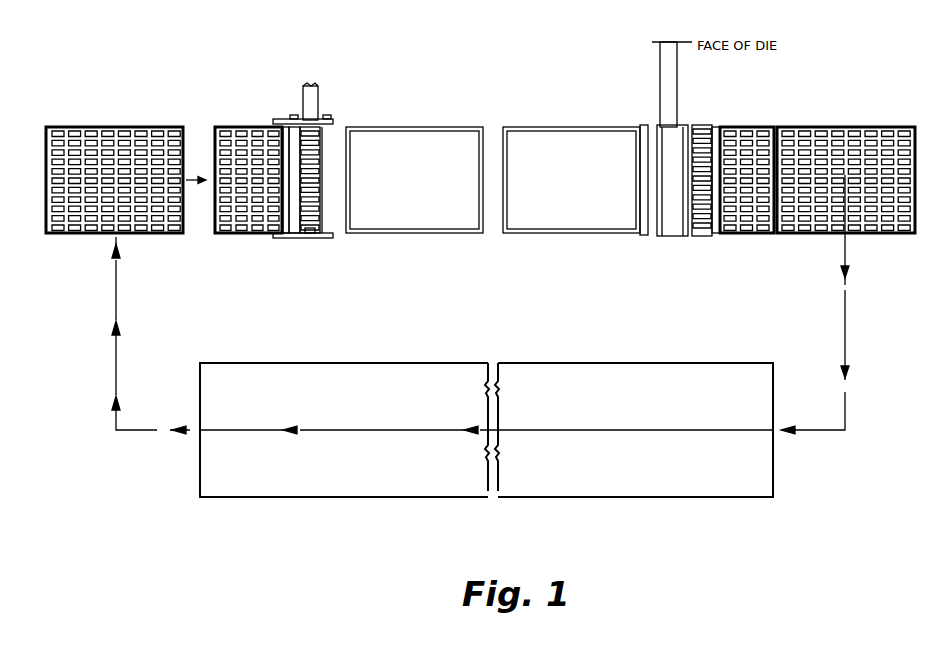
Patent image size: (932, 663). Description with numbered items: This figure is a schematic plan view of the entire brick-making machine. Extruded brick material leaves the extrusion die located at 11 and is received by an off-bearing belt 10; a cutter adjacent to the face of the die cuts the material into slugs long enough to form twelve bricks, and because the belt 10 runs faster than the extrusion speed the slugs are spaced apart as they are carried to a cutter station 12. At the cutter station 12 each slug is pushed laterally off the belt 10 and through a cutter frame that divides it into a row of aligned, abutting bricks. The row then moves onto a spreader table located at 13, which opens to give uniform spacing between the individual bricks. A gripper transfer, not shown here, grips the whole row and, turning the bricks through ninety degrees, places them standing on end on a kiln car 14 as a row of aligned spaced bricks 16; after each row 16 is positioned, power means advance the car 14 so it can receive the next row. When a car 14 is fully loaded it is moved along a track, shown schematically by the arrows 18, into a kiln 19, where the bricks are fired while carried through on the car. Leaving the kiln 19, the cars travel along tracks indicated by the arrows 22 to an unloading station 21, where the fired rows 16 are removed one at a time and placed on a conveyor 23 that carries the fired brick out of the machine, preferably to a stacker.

The off-bearing belt 10 is at (677, 80).
The extrusion die 11 is at (655, 43).
The cutter station 12 is at (679, 208).
The spreader table 13 is at (700, 242).
The kiln car 14 is at (229, 127).
The row of aligned spaced bricks 16 is at (255, 234).
The arrows (track to kiln) 18 is at (847, 320).
The kiln 19 is at (660, 360).
The unloading station 21 is at (302, 248).
The arrows (tracks from kiln) 22 is at (118, 296).
The conveyor 23 is at (318, 100).